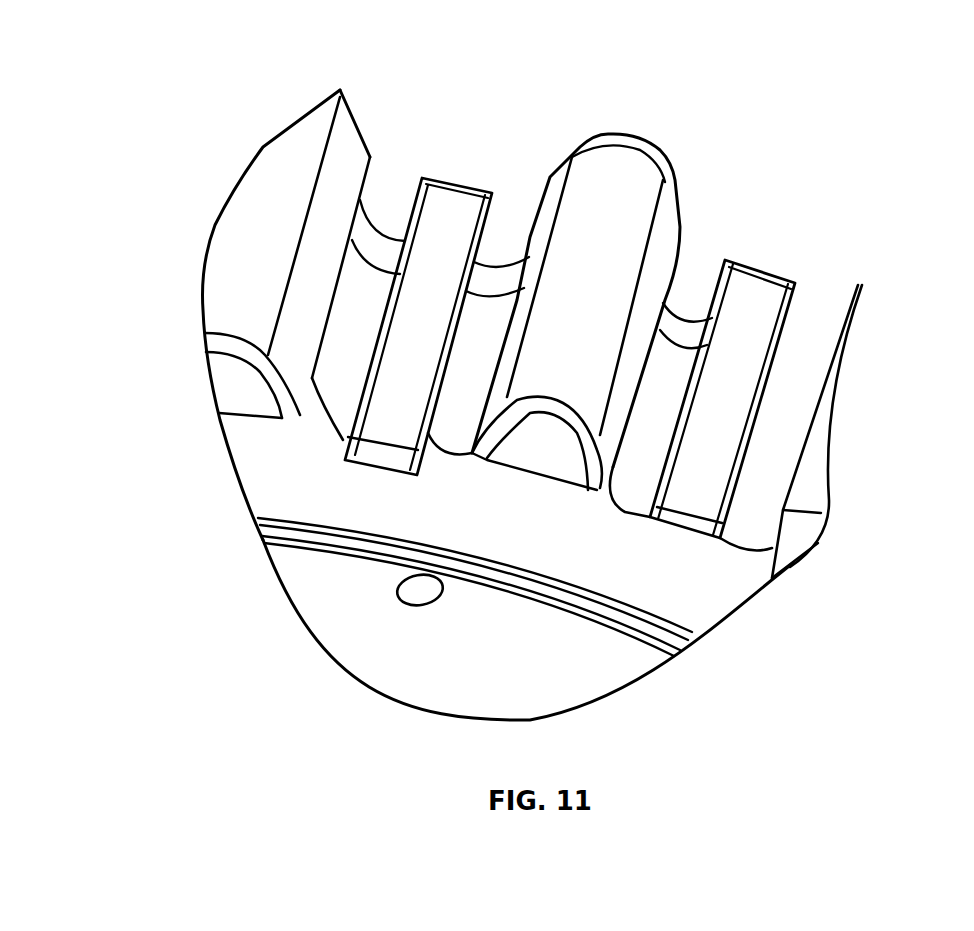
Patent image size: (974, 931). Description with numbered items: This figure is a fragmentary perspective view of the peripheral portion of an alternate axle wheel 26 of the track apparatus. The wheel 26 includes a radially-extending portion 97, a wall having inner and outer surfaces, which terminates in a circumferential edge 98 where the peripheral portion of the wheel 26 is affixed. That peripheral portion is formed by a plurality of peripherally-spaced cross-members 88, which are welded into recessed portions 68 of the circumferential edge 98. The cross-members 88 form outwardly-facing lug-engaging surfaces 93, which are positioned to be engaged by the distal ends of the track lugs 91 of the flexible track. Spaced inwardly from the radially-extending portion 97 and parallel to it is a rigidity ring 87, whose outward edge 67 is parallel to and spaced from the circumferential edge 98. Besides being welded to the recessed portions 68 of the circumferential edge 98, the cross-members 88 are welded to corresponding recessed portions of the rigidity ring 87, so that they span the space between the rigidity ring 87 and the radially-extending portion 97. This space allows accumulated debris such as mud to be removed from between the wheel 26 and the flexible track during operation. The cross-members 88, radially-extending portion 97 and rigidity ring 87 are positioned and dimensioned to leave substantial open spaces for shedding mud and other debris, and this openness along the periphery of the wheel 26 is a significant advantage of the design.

The wheel 26 is at (443, 672).
The outward edge 67 is at (376, 240).
The recessed portions 68 is at (440, 453).
The rigidity ring 87 is at (350, 303).
The cross-members 88 is at (492, 213).
The track lugs 91 is at (257, 187).
The lug-engaging surfaces 93 is at (417, 372).
The radially-extending portion 97 is at (600, 677).
The circumferential edge 98 is at (317, 420).